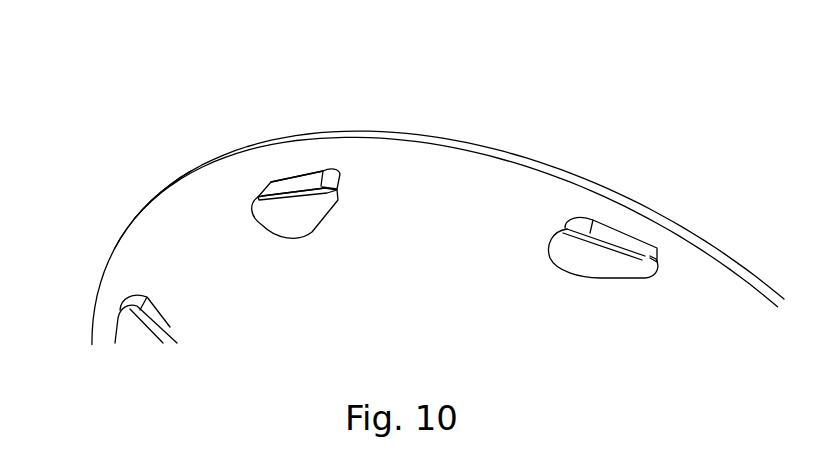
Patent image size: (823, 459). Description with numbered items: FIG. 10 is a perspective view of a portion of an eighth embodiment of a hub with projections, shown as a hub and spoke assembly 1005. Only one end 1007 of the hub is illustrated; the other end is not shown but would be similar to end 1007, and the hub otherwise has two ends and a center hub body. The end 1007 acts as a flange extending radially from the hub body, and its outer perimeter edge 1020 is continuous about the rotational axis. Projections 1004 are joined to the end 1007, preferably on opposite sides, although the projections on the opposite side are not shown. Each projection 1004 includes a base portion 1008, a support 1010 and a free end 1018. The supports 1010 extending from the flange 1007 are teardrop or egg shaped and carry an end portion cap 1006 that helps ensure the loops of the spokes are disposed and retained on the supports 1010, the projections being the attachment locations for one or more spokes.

The projection 1004 is at (286, 155).
The hub and spoke assembly 1005 is at (138, 183).
The end portion cap 1006 is at (252, 210).
The end of hub 1007 is at (597, 143).
The base portion 1008 is at (341, 170).
The support 1010 is at (303, 180).
The free end 1018 is at (334, 188).
The outer perimeter edge 1020 is at (198, 167).